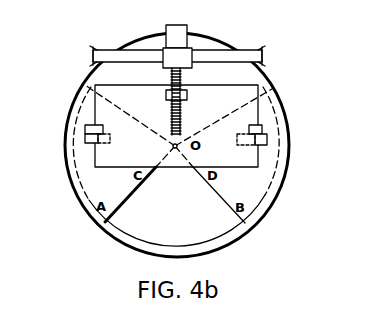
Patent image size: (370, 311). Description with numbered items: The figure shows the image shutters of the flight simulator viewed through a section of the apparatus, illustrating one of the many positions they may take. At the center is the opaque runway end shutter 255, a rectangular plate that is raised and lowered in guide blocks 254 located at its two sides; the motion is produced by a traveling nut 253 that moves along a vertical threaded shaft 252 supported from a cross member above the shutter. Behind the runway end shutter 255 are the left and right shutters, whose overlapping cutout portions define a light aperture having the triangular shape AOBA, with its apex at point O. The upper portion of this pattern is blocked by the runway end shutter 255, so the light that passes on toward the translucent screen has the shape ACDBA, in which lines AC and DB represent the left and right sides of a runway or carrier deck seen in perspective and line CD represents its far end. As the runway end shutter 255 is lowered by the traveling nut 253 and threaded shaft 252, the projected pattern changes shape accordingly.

The threaded shaft 252 is at (171, 113).
The traveling nut 253 is at (188, 98).
The guide blocks 254 is at (90, 145).
The runway end shutter 255 is at (108, 167).